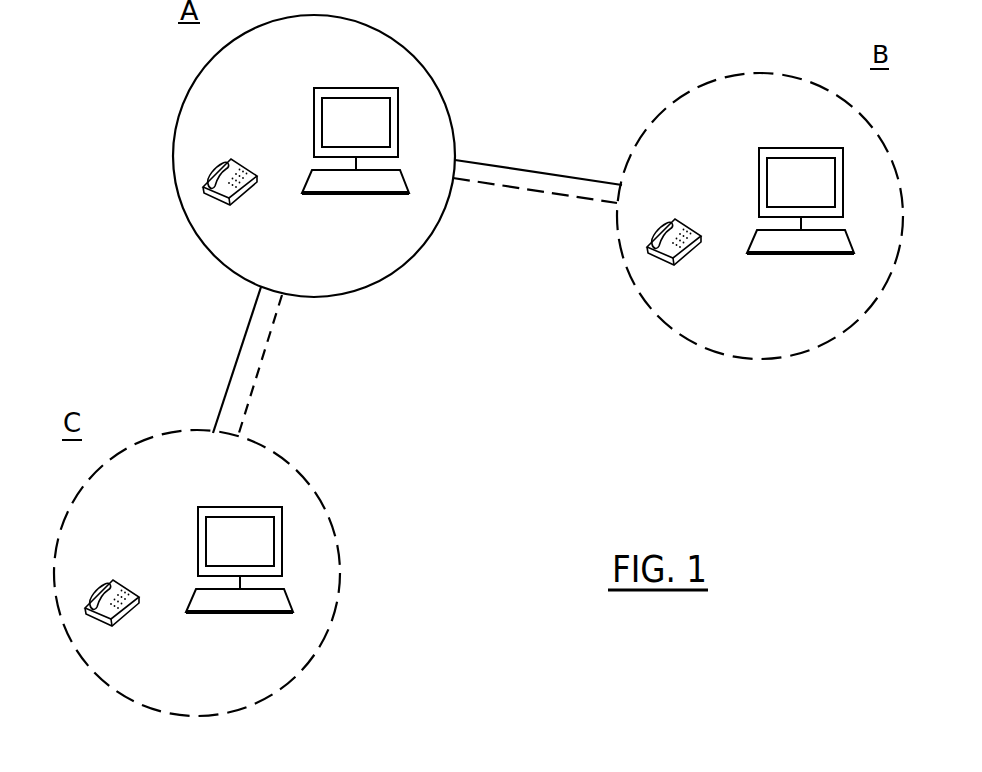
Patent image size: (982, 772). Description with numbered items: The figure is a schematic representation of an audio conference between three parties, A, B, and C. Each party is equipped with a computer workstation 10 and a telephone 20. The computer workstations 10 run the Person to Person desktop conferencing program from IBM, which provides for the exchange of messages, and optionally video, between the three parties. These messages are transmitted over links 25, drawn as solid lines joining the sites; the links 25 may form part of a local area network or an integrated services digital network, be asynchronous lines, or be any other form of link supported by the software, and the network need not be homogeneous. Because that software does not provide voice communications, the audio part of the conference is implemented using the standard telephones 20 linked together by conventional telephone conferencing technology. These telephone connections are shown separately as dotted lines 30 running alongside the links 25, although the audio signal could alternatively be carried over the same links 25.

The computer workstation 10 is at (400, 108).
The telephone 20 is at (215, 165).
The links 25 is at (562, 176).
The dotted lines 30 is at (567, 196).